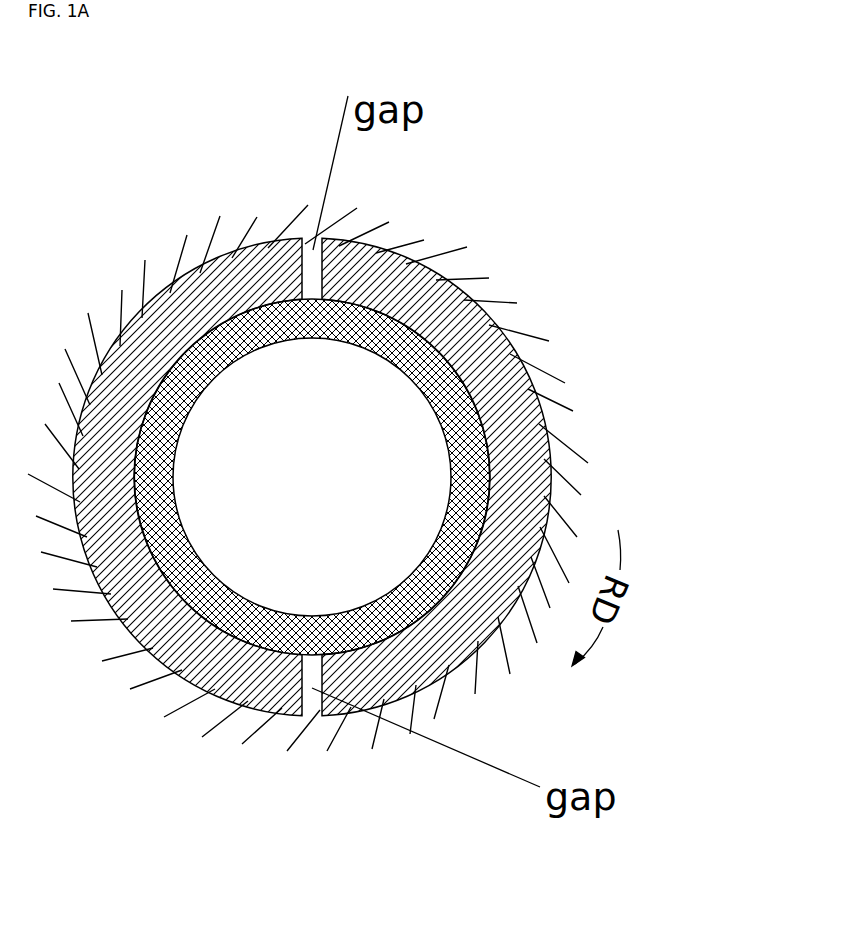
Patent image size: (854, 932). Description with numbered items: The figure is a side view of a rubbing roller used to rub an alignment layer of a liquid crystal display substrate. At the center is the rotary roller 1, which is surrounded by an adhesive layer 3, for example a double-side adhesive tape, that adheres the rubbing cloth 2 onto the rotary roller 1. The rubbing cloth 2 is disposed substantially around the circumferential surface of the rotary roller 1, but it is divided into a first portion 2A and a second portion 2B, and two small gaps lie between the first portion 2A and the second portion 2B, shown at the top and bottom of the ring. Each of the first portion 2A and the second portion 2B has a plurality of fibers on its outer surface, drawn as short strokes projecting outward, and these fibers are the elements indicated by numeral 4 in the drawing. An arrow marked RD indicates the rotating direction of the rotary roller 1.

The rotary roller 1 is at (332, 477).
The rubbing cloth 2 is at (313, 577).
The first portion 2A is at (272, 676).
The second portion 2B is at (362, 690).
The adhesive layer 3 is at (512, 428).
The bristles 4 is at (580, 530).